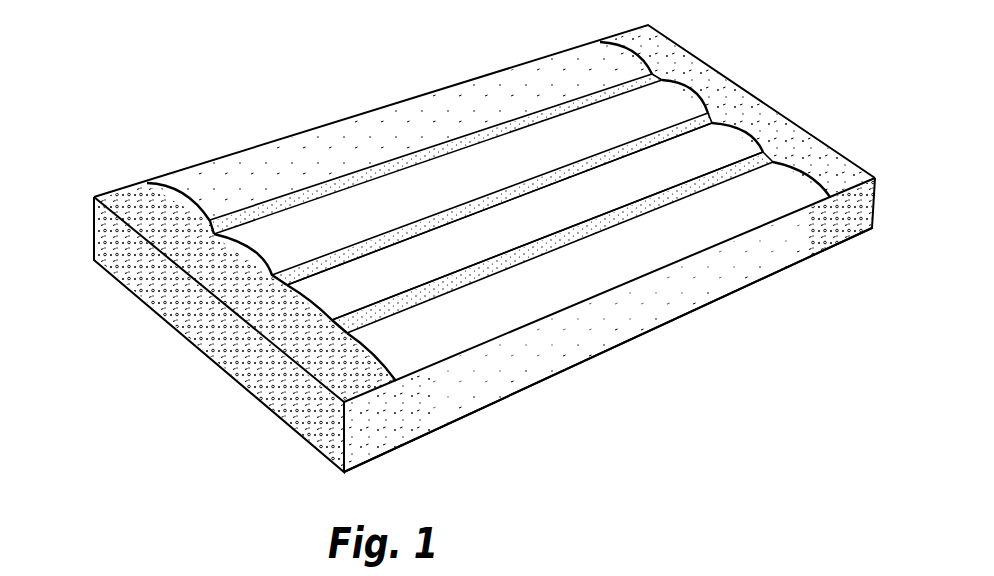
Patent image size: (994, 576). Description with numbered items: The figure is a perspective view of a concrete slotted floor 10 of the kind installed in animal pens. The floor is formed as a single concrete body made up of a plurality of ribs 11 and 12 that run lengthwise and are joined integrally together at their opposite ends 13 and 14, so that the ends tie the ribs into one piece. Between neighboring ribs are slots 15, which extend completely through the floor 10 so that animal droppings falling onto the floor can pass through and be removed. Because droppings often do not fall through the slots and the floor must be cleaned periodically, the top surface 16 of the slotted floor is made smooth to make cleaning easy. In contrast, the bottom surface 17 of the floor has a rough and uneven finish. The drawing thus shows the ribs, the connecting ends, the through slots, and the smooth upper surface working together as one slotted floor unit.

The concrete slotted floor 10 is at (470, 241).
The rib 11 is at (600, 273).
The rib 12 is at (345, 290).
The end 13 is at (207, 270).
The end 14 is at (488, 175).
The slot 15 is at (628, 150).
The top surface 16 is at (763, 198).
The bottom surface 17 is at (668, 326).